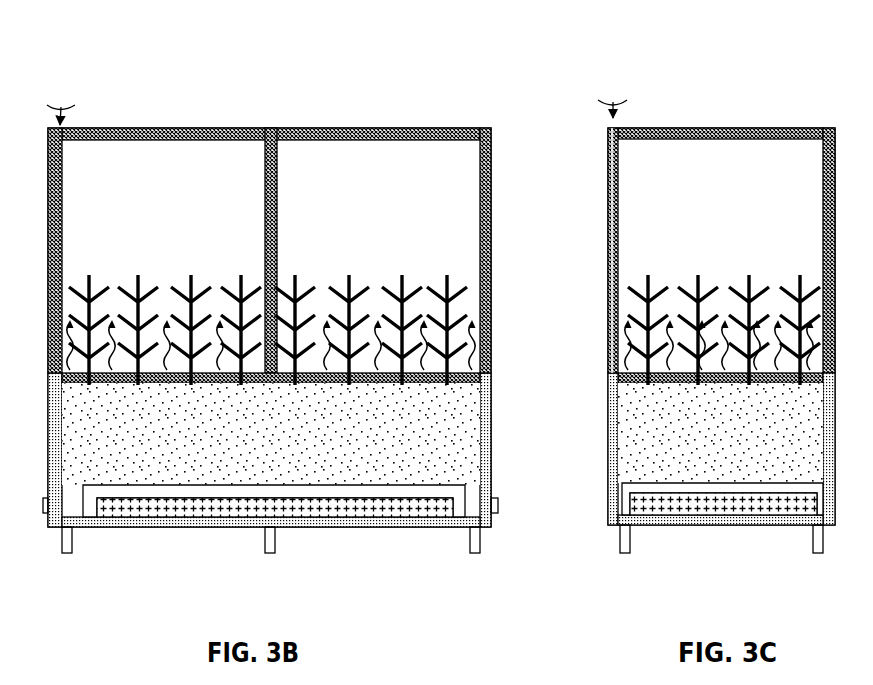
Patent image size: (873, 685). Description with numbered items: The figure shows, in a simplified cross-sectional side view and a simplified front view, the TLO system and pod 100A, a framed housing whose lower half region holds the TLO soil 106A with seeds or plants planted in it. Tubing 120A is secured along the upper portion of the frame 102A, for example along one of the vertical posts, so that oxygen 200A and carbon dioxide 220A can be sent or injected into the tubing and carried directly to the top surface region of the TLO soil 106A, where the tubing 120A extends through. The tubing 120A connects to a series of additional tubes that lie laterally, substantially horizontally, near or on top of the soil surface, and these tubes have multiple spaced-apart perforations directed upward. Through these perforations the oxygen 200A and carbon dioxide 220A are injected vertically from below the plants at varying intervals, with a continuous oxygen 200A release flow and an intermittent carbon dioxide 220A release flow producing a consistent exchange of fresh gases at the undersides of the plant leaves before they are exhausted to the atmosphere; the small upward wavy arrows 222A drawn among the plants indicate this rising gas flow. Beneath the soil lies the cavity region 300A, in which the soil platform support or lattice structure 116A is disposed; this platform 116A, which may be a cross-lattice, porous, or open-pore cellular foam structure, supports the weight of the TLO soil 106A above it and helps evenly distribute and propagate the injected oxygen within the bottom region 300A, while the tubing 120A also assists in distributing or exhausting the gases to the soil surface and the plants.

In FIG. 3B, the TLO system and pod 100A is at (299, 99).
In FIG. 3B, the frame 102A is at (352, 137).
In FIG. 3C, the frame 102A is at (740, 128).
In FIG. 3B, the TLO soil 106A is at (433, 421).
In FIG. 3C, the TLO soil 106A is at (720, 433).
In FIG. 3B, the soil platform support or lattice structure 116A is at (240, 493).
In FIG. 3C, the soil platform support or lattice structure 116A is at (690, 489).
In FIG. 3B, the tubing 120A is at (63, 197).
In FIG. 3C, the tubing 120A is at (608, 163).
In FIG. 3B, the oxygen 200A is at (58, 87).
In FIG. 3C, the oxygen 200A is at (610, 82).
In FIG. 3B, the carbon dioxide 220A is at (67, 96).
In FIG. 3C, the carbon dioxide 220A is at (621, 86).
In FIG. 3B, the upward airflow 222A is at (173, 363).
In FIG. 3B, the cavity region 300A is at (385, 506).